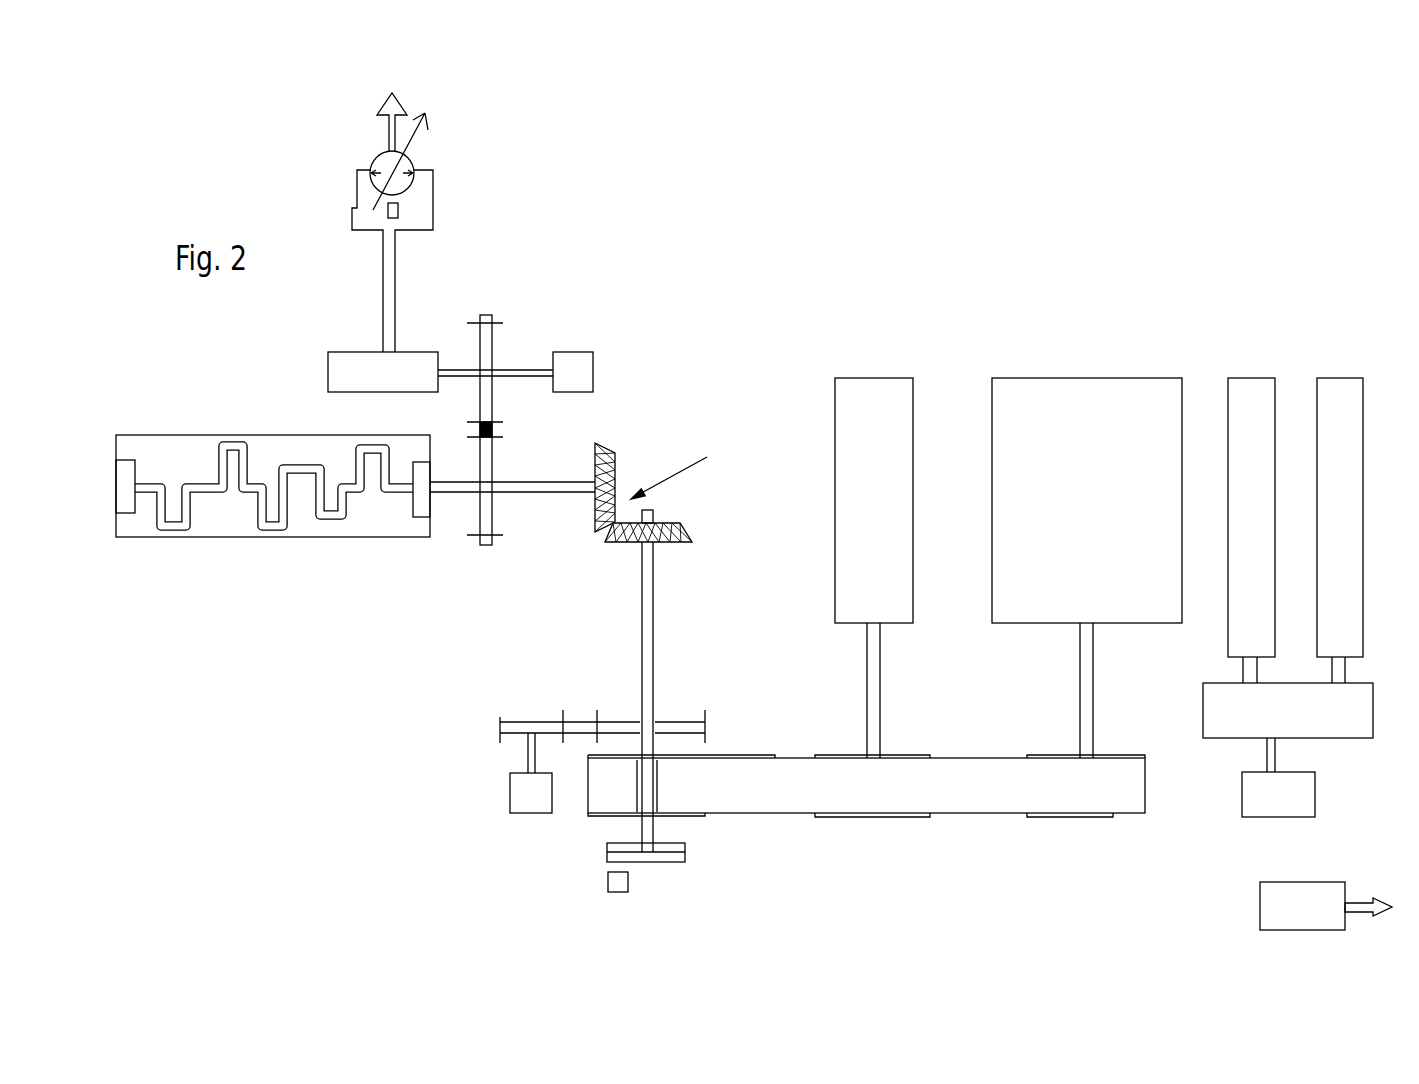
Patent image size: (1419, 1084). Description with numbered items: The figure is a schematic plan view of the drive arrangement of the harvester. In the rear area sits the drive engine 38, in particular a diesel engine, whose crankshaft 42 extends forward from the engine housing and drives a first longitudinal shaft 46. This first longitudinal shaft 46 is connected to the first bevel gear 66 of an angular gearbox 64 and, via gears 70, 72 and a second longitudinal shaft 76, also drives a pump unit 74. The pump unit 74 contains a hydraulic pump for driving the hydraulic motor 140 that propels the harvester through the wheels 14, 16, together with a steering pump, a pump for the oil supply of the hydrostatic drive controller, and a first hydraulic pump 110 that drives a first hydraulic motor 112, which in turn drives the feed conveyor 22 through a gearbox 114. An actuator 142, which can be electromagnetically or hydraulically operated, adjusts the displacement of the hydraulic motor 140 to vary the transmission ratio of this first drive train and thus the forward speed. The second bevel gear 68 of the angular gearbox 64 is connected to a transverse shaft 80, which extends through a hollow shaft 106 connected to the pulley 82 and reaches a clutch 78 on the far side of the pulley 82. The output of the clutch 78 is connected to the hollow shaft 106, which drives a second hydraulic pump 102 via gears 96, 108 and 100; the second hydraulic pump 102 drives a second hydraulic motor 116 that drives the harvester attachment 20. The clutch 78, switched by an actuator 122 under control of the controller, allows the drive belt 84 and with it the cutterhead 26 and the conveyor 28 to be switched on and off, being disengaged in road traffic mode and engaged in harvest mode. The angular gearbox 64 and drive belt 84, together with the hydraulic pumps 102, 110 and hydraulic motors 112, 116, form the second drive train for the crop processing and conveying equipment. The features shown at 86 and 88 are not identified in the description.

The wheels 14 is at (392, 101).
The wheels 16 is at (405, 131).
The harvester attachment 20 is at (1382, 907).
The feed conveyor 22 is at (1345, 385).
The cutterhead 26 is at (1033, 405).
The conveyor 28 is at (865, 407).
The drive engine 38 is at (278, 539).
The crankshaft 42 is at (293, 498).
The first longitudinal shaft 46 is at (440, 490).
The angular gearbox 64 is at (683, 468).
The first bevel gear 66 is at (603, 450).
The second bevel gear 68 is at (677, 528).
The gear 70 is at (485, 453).
The gear 72 is at (483, 340).
The pump unit 74 is at (355, 365).
The second longitudinal shaft 76 is at (452, 372).
The clutch 78 is at (663, 857).
The transverse shaft 80 is at (647, 692).
The pulley 82 is at (603, 817).
The drive belt 84 is at (866, 832).
The bearing pad 86 is at (878, 817).
The bearing pad 88 is at (1112, 817).
The gear 96 is at (708, 727).
The gear 100 is at (502, 720).
The second hydraulic pump 102 is at (520, 797).
The hollow shaft 106 is at (658, 777).
The gear 108 is at (578, 735).
The first hydraulic pump 110 is at (578, 362).
The first hydraulic motor 112 is at (1298, 793).
The gearbox 114 is at (1222, 720).
The second hydraulic motor 116 is at (1277, 905).
The actuator 122 is at (617, 892).
The hydraulic motor 140 is at (413, 153).
The actuator 142 is at (398, 212).